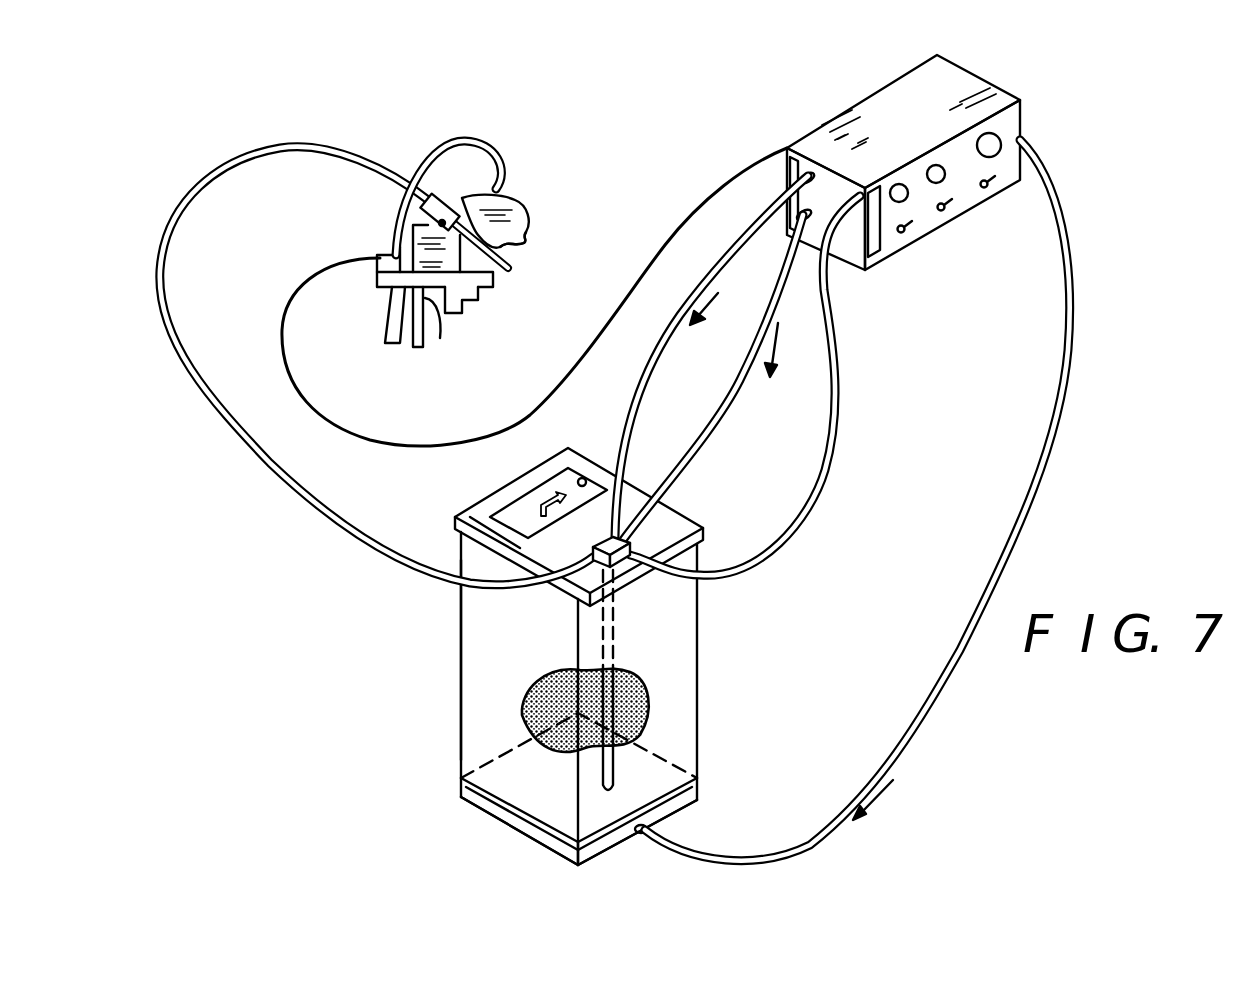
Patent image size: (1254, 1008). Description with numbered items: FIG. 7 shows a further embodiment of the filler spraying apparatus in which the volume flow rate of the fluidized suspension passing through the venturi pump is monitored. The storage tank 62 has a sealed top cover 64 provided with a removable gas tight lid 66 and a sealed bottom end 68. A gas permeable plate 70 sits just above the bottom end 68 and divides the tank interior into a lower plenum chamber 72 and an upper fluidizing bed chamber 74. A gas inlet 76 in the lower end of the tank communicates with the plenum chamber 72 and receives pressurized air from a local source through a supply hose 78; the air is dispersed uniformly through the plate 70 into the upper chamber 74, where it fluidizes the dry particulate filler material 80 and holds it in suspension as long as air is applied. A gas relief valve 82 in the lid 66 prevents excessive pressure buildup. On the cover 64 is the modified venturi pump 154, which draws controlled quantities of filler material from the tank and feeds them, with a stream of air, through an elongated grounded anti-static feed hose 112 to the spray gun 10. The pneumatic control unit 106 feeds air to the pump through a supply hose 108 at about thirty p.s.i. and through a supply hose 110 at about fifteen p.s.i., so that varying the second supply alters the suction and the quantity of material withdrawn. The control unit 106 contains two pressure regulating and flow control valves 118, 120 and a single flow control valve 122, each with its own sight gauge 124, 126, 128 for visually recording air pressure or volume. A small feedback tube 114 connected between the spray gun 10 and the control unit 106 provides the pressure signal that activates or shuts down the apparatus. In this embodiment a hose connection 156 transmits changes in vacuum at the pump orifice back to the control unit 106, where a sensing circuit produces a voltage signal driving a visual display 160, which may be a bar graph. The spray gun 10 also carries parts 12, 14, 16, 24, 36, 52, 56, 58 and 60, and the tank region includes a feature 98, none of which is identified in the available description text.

The spray gun 10 is at (457, 228).
The nozzle 12 is at (377, 283).
The support leg 14 is at (392, 322).
The support leg 16 is at (430, 320).
The mounting bracket 24 is at (492, 298).
The coupling 36 is at (442, 197).
The probe 52 is at (512, 268).
The bulb housing 56 is at (516, 198).
The hose 58 is at (455, 140).
The bulb wall 60 is at (526, 240).
The storage tank 62 is at (700, 628).
The sealed top cover 64 is at (690, 523).
The removable gas tight lid 66 is at (510, 518).
The sealed bottom end 68 is at (476, 805).
The gas permeable plate 70 is at (532, 820).
The lower plenum chamber 72 is at (596, 850).
The upper fluidizing bed chamber 74 is at (478, 655).
The gas inlet 76 is at (648, 830).
The supply hose 78 is at (912, 745).
The dry particulate filler material 80 is at (636, 685).
The gas relief valve 82 is at (582, 478).
The dip tube 98 is at (612, 775).
The pneumatic control unit 106 is at (975, 95).
The supply hose 108 is at (745, 405).
The supply hose 110 is at (660, 355).
The anti-static feed hose 112 is at (298, 497).
The feedback tube 114 is at (665, 232).
The pressure regulating and flow control valve 118 is at (907, 237).
The pressure regulating and flow control valve 120 is at (945, 212).
The flow control valve 122 is at (990, 190).
The sight gauge 124 is at (899, 183).
The sight gauge 126 is at (936, 165).
The sight gauge 128 is at (1000, 140).
The venturi pump 154 is at (550, 487).
The hose connection 156 is at (830, 492).
The visual display 160 is at (878, 265).